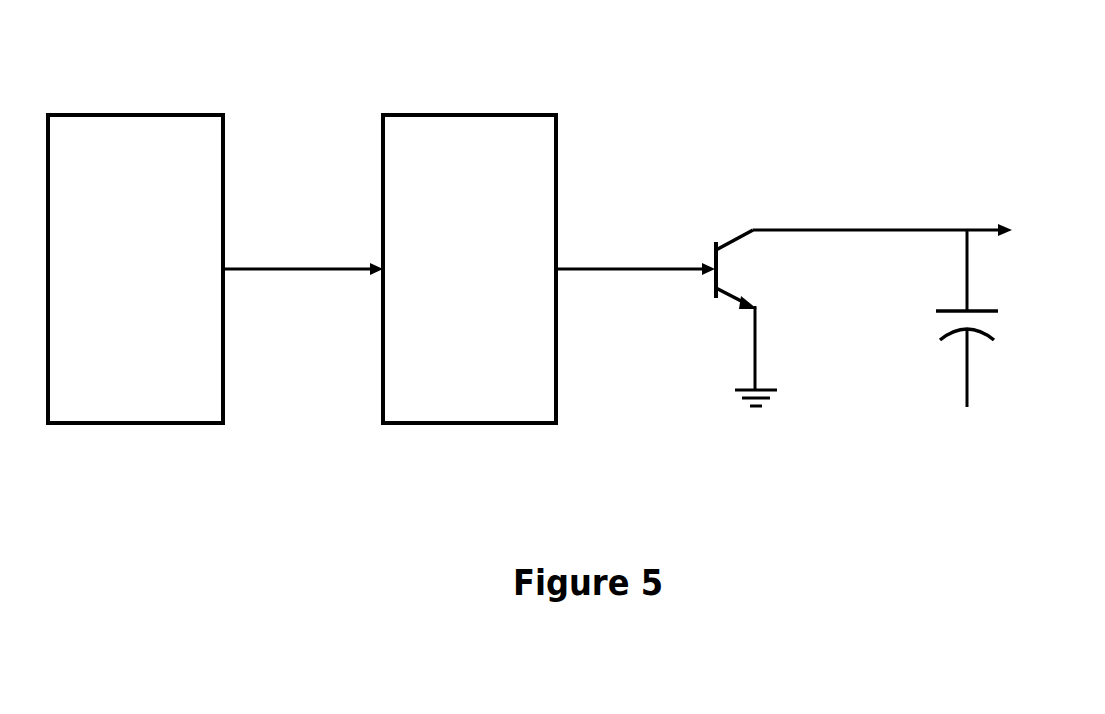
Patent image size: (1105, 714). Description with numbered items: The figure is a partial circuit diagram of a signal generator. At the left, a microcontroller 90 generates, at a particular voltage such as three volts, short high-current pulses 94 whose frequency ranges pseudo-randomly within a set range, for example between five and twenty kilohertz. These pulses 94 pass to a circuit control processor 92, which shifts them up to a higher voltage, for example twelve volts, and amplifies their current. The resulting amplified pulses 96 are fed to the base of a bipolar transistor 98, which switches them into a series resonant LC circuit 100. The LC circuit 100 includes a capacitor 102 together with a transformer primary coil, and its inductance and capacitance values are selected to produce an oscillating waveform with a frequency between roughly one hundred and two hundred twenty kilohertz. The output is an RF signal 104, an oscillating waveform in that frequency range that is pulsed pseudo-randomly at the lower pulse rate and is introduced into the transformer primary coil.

The microcontroller 90 is at (223, 386).
The circuit control processor 92 is at (556, 388).
The short high-current pulses 94 is at (297, 269).
The amplified pulses 96 is at (629, 269).
The bipolar transistor 98 is at (733, 272).
The series resonant LC circuit 100 is at (965, 387).
The capacitor 102 is at (978, 337).
The RF signal 104 is at (988, 229).